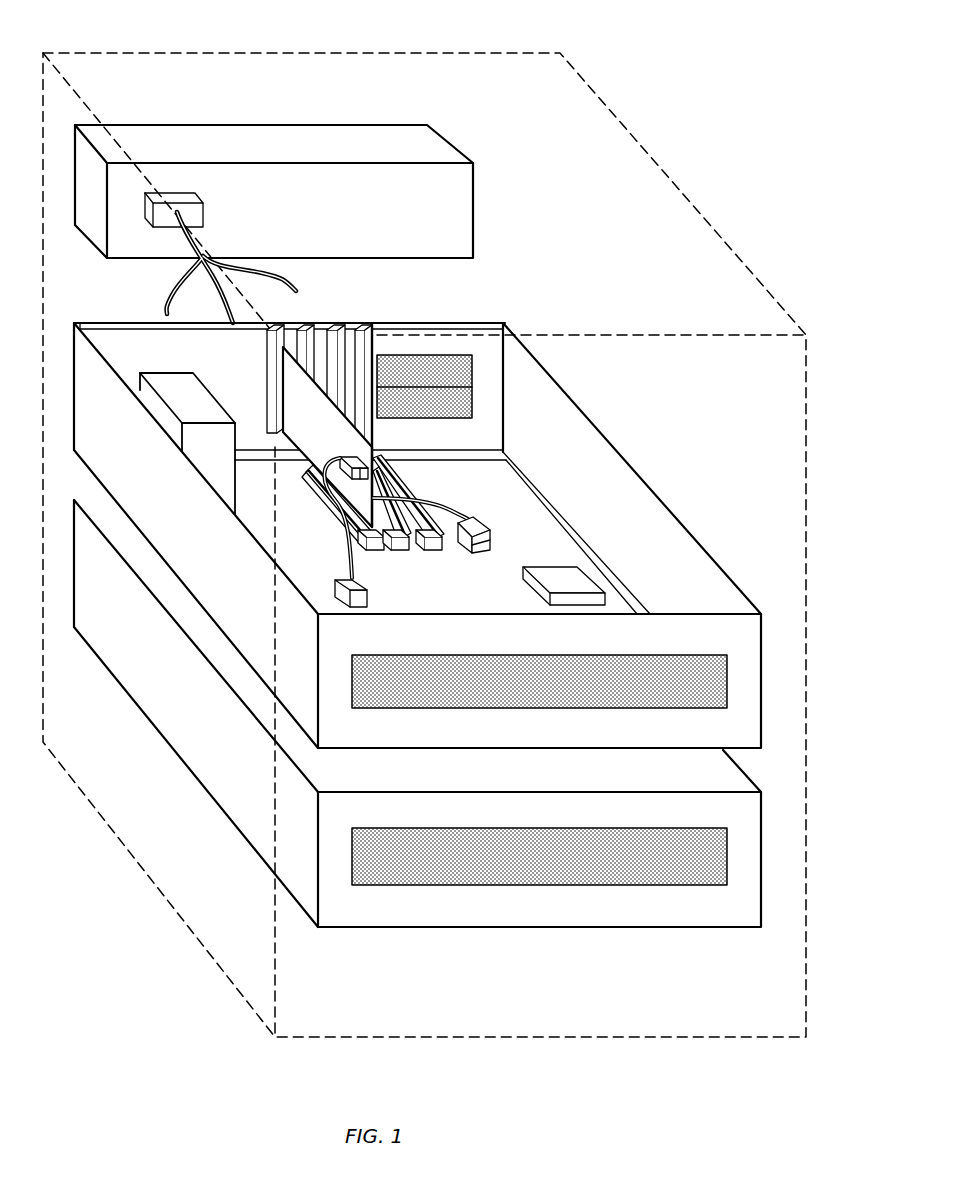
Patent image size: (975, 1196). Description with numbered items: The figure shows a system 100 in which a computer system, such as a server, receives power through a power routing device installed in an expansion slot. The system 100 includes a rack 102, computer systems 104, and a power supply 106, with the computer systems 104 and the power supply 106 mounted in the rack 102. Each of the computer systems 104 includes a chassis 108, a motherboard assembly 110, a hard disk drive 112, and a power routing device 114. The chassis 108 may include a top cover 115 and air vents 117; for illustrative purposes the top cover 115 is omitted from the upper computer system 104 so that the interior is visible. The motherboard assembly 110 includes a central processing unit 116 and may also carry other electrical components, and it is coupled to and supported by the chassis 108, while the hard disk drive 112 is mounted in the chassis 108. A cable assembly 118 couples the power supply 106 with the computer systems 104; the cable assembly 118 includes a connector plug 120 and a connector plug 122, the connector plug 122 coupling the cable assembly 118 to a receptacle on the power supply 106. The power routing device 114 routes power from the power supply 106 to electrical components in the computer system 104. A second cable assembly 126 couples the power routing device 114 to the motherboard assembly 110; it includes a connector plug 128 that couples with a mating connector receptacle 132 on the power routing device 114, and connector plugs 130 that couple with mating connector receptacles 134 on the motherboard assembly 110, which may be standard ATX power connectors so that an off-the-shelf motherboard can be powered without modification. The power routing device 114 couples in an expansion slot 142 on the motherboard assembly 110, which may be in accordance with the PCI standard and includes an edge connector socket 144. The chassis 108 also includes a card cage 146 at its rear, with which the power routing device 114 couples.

The system 100 is at (645, 58).
The rack 102 is at (585, 1040).
The computer systems 104 is at (199, 522).
The power supply 106 is at (452, 196).
The chassis 108 is at (706, 741).
The motherboard assembly 110 is at (466, 607).
The hard disk drive 112 is at (226, 449).
The power routing device 114 is at (342, 451).
The top cover 115 is at (755, 785).
The central processing unit 116 is at (545, 570).
The air vents 117 is at (437, 354).
The cable assembly 118 is at (168, 293).
The connector plug 120 is at (205, 212).
The connector plug 122 is at (220, 268).
The cable assembly 126 is at (348, 572).
The connector plug 128 is at (318, 490).
The connector plugs 130 is at (478, 521).
The mating connector receptacle 132 is at (372, 463).
The mating connector receptacles 134 is at (490, 552).
The expansion slot 142 is at (380, 441).
The edge connector socket 144 is at (376, 552).
The card cage 146 is at (182, 369).